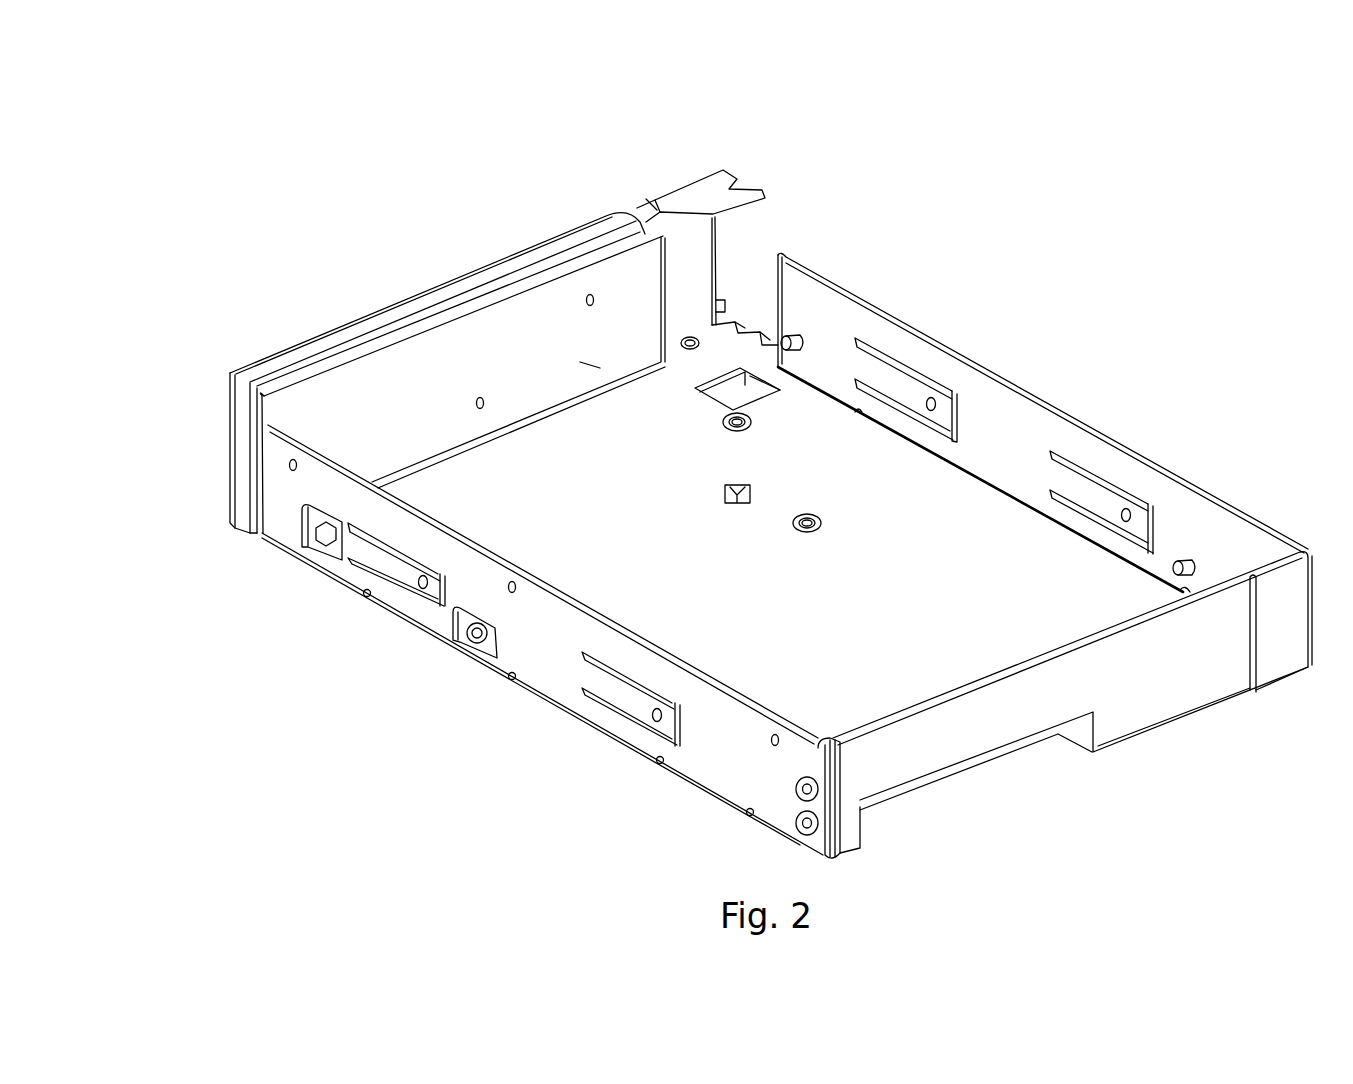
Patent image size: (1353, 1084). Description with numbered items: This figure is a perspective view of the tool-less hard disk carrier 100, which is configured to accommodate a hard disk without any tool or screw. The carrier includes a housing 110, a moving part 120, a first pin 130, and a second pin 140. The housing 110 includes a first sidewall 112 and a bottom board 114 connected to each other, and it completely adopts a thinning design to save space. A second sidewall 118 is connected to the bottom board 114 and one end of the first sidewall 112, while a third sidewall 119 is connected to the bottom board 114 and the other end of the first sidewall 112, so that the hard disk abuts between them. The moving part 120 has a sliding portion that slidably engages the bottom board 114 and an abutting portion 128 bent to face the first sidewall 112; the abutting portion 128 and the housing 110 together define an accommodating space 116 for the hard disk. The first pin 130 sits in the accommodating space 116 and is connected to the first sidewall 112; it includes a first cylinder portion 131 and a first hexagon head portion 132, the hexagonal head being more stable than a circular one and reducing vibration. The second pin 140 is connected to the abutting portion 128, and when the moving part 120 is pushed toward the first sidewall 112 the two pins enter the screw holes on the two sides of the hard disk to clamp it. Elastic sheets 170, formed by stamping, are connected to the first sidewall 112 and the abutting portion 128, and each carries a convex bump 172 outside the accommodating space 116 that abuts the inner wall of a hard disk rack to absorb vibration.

The tool-less hard disk carrier 100 is at (144, 110).
The housing 110 is at (259, 677).
The first sidewall 112 is at (553, 627).
The bottom board 114 is at (630, 447).
The accommodating space 116 is at (384, 409).
The second sidewall 118 is at (412, 353).
The third sidewall 119 is at (1177, 662).
The moving part 120 is at (943, 340).
The abutting portion 128 is at (1035, 430).
The first pin 130 is at (158, 571).
The first cylinder portion 131 is at (348, 528).
The first hexagon head portion 132 is at (315, 535).
The second pin 140 is at (796, 333).
The elastic sheet 170 is at (620, 692).
The convex bump 172 is at (653, 715).